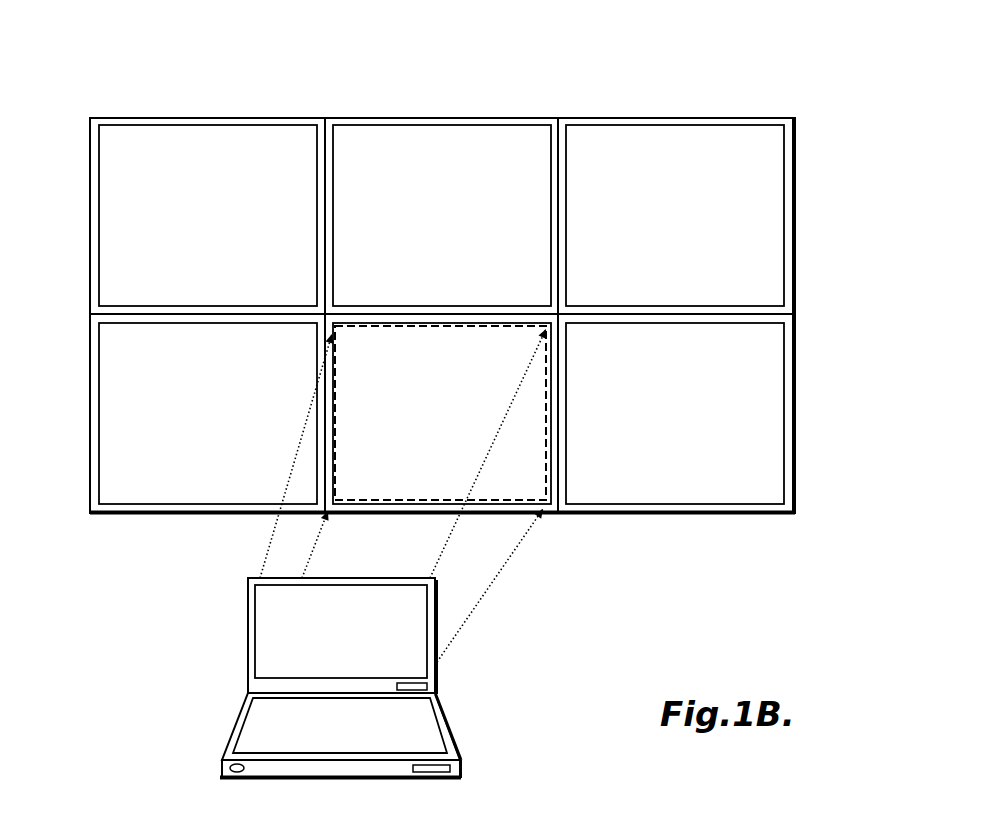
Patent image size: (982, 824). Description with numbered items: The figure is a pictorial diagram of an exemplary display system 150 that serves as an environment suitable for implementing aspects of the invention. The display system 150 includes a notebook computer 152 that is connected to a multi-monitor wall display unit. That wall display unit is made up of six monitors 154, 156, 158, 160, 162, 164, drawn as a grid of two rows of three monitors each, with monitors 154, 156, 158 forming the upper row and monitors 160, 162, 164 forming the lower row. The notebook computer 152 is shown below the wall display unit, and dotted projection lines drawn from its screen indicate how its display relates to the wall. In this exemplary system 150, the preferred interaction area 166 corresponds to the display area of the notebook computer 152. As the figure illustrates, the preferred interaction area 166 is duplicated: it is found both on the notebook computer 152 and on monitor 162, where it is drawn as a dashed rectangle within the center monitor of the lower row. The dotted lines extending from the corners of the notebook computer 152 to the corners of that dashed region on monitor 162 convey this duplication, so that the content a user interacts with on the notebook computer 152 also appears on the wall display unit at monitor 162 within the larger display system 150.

The display system 150 is at (103, 81).
The notebook computer 152 is at (248, 640).
The monitor 154 is at (205, 118).
The monitor 156 is at (440, 118).
The monitor 158 is at (673, 118).
The monitor 160 is at (177, 513).
The monitor 162 is at (497, 513).
The monitor 164 is at (697, 513).
The preferred interaction area 166 is at (527, 427).